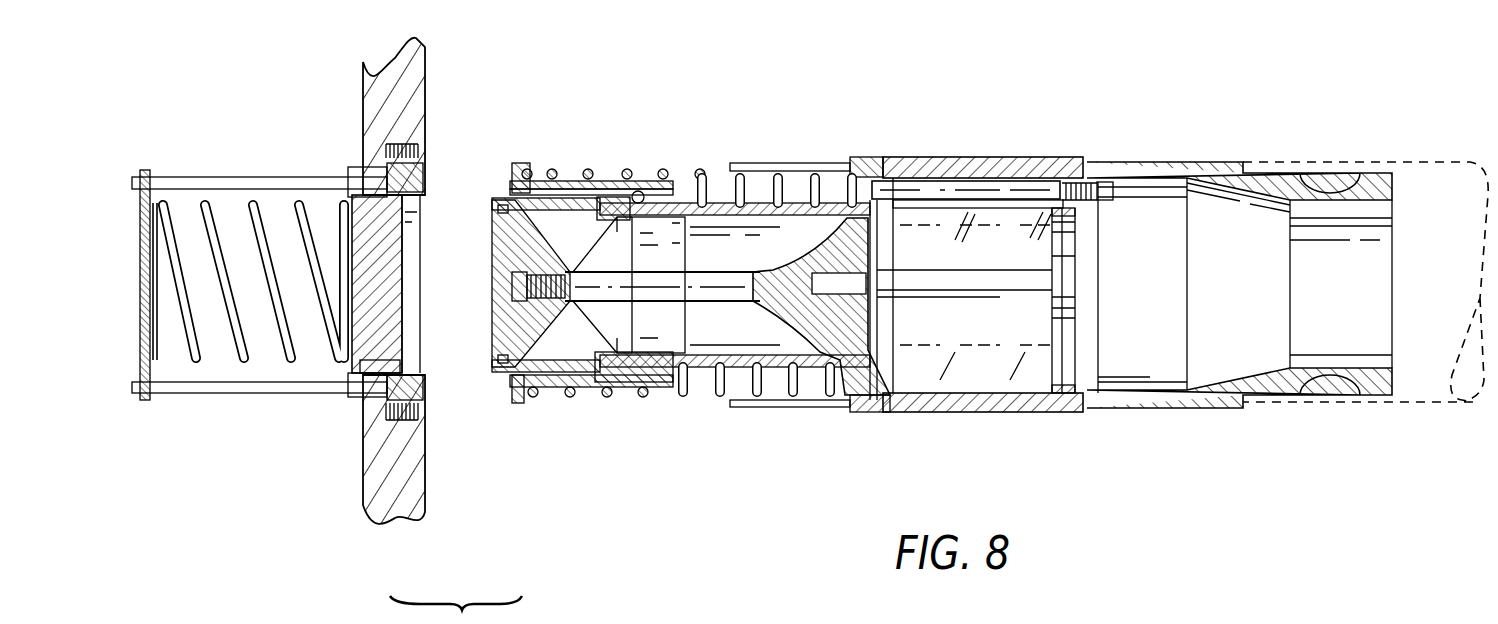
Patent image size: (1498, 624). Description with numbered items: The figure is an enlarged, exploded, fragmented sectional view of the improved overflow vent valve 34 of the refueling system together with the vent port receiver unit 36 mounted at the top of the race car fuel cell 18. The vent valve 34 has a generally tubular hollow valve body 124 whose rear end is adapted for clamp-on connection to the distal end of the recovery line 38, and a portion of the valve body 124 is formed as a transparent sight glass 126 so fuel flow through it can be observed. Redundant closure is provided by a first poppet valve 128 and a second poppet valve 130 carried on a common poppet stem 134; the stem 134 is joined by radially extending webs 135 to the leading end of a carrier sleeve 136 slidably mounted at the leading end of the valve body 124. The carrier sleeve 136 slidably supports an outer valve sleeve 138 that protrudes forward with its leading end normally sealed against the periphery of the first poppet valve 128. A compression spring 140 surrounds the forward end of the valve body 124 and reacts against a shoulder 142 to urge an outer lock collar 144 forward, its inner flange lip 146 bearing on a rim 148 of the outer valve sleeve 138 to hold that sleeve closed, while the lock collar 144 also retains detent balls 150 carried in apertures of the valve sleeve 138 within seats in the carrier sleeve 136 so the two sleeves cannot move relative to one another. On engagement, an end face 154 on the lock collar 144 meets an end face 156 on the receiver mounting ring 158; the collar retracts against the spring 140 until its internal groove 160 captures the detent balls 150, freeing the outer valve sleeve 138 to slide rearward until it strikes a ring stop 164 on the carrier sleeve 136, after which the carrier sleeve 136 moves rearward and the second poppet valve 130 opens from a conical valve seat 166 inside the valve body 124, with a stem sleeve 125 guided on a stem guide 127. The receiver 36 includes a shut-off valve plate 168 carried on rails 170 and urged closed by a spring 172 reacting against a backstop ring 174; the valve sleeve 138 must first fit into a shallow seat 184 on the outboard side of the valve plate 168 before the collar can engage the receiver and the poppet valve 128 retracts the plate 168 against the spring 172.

The fuel cell 18 is at (265, 113).
The overflow vent valve 34 is at (975, 133).
The vent port receiver unit 36 is at (436, 103).
The recovery line 38 is at (1360, 405).
The valve body 124 is at (1138, 162).
The stem sleeve 125 is at (970, 268).
The transparent sight glass 126 is at (1020, 413).
The stem guide 127 is at (1010, 292).
The first poppet valve 128 is at (490, 355).
The second poppet valve 130 is at (865, 322).
The poppet stem 134 is at (700, 280).
The webs 135 is at (618, 324).
The carrier sleeve 136 is at (680, 205).
The outer valve sleeve 138 is at (620, 400).
The compression spring 140 is at (778, 174).
The shoulder 142 is at (518, 165).
The outer lock collar 144 is at (602, 190).
The inner flange lip 146 is at (565, 183).
The rim 148 is at (560, 389).
The detent balls 150 is at (640, 190).
The end face 154 is at (512, 404).
The end face 156 is at (423, 180).
The receiver mounting ring 158 is at (390, 395).
The internal groove 160 is at (595, 400).
The ring stop 164 is at (782, 397).
The conical valve seat 166 is at (872, 372).
The shut-off valve plate 168 is at (385, 312).
The rails 170 is at (195, 395).
The spring 172 is at (218, 202).
The backstop ring 174 is at (140, 368).
The shallow seat 184 is at (410, 367).